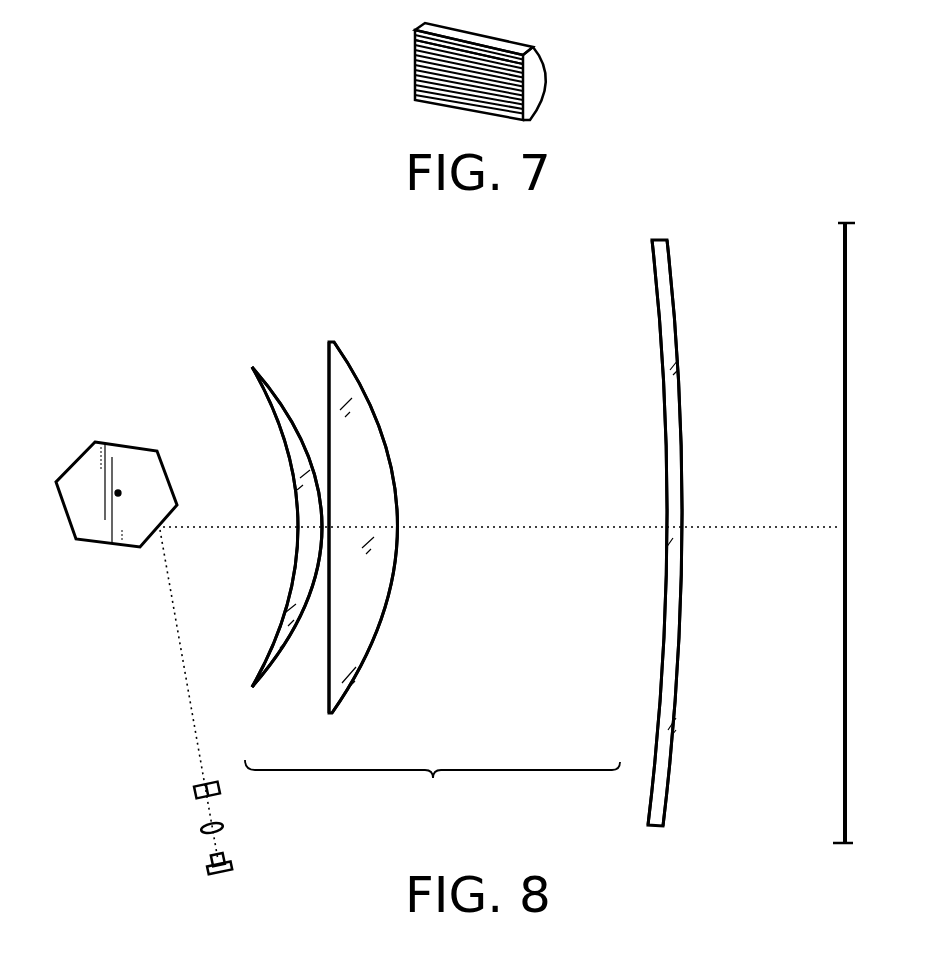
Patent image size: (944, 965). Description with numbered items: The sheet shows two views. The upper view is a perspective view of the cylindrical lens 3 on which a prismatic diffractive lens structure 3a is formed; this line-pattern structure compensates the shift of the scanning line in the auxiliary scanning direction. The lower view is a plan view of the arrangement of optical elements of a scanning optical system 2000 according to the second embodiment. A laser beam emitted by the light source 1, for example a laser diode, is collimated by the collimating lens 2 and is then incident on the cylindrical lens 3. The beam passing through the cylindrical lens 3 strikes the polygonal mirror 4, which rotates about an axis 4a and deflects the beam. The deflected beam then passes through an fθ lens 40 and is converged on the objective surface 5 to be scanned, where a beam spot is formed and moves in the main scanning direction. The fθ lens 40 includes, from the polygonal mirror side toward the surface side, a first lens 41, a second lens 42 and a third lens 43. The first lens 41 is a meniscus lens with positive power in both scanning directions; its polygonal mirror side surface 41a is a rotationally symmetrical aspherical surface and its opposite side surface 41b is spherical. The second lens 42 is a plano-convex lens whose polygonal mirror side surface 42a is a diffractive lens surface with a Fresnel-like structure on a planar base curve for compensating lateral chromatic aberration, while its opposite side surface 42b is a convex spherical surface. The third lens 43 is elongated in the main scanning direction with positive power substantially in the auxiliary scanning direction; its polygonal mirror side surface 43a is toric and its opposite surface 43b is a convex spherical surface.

In FIG. 8, the light source 1 is at (208, 865).
In FIG. 8, the collimating lens 2 is at (202, 828).
In FIG. 7, the cylindrical lens 3 is at (552, 65).
In FIG. 8, the cylindrical lens 3 is at (195, 790).
In FIG. 7, the prismatic diffractive lens structure 3a is at (443, 83).
In FIG. 8, the polygonal mirror 4 is at (103, 532).
In FIG. 8, the axis 4a is at (118, 493).
In FIG. 8, the objective surface 5 is at (843, 745).
In FIG. 8, the fθ lens 40 is at (432, 786).
In FIG. 8, the first lens 41 is at (285, 657).
In FIG. 8, the polygonal mirror side surface of the first lens 41a is at (273, 413).
In FIG. 8, the opposite side surface of the first lens 41b is at (277, 382).
In FIG. 8, the second lens 42 is at (360, 668).
In FIG. 8, the polygonal mirror side surface of the second lens 42a is at (330, 352).
In FIG. 8, the opposite side surface of the second lens 42b is at (430, 440).
In FIG. 8, the third lens 43 is at (667, 703).
In FIG. 8, the polygonal mirror side surface of the third lens 43a is at (660, 327).
In FIG. 8, the opposite surface of the third lens 43b is at (677, 287).
In FIG. 8, the scanning optical system 2000 is at (233, 280).